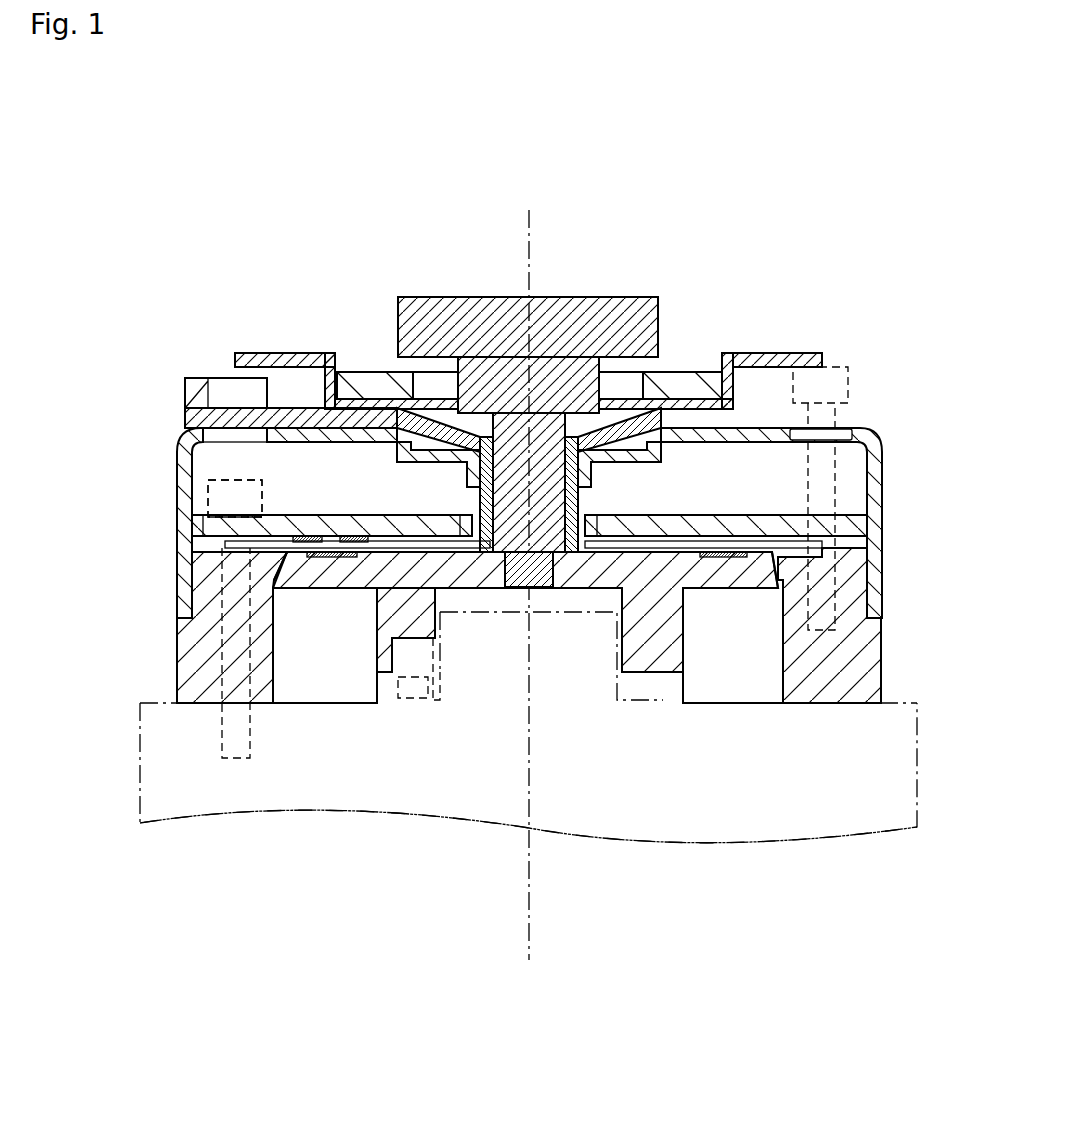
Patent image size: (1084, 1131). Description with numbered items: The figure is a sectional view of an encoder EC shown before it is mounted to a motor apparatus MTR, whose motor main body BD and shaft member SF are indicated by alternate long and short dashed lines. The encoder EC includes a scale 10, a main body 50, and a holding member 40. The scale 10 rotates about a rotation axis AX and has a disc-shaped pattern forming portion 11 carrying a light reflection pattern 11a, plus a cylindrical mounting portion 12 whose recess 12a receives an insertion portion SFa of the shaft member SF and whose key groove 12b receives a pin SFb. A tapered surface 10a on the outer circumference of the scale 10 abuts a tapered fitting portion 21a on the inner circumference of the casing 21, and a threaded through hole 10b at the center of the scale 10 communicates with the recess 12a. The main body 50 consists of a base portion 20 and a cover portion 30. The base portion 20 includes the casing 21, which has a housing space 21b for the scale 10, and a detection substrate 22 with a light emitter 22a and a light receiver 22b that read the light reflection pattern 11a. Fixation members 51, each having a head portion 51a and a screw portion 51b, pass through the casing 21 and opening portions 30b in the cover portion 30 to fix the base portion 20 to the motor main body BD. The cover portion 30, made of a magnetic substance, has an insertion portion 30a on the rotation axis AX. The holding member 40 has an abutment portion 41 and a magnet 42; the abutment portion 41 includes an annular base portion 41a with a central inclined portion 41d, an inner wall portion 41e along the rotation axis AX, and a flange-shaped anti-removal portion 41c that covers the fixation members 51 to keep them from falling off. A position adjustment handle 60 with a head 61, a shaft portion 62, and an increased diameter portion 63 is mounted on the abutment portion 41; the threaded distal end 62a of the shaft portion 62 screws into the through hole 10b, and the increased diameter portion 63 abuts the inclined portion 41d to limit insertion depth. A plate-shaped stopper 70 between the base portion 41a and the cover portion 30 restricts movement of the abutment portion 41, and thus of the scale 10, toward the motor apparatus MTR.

The rotation axis AX is at (527, 252).
The encoder EC is at (877, 232).
The motor apparatus MTR is at (862, 855).
The motor main body BD is at (140, 766).
The shaft member SF is at (668, 715).
The insertion portion SFa is at (436, 708).
The pin SFb is at (380, 702).
The scale 10 is at (780, 600).
The tapered surface 10a is at (777, 565).
The through hole 10b is at (516, 589).
The pattern forming portion 11 is at (343, 585).
The light reflection pattern 11a is at (288, 565).
The mounting portion 12 is at (684, 658).
The recess 12a is at (623, 612).
The key groove 12b is at (408, 657).
The base portion 20 is at (163, 634).
The casing 21 is at (190, 681).
The fitting portion 21a is at (284, 594).
The housing space 21b is at (707, 690).
The detection substrate 22 is at (855, 522).
The light emitter 22a is at (308, 536).
The light receiver 22b is at (360, 536).
The cover portion 30 is at (163, 585).
The insertion portion 30a is at (590, 478).
The opening portions 30b is at (843, 428).
The holding member 40 is at (770, 279).
The abutment portion 41 is at (752, 348).
The base portion 41a is at (362, 372).
The anti-removal portion 41c is at (258, 352).
The inclined portion 41d is at (432, 446).
The inner wall portion 41e is at (558, 494).
The magnet 42 is at (704, 358).
The main body 50 is at (90, 570).
The fixation members 51 is at (100, 437).
The head portion 51a is at (215, 479).
The screw portion 51b is at (226, 546).
The position adjustment handle 60 is at (441, 292).
The head 61 is at (608, 296).
The shaft portion 62 is at (554, 560).
The distal end 62a is at (543, 589).
The increased diameter portion 63 is at (468, 365).
The stopper 70 is at (238, 417).